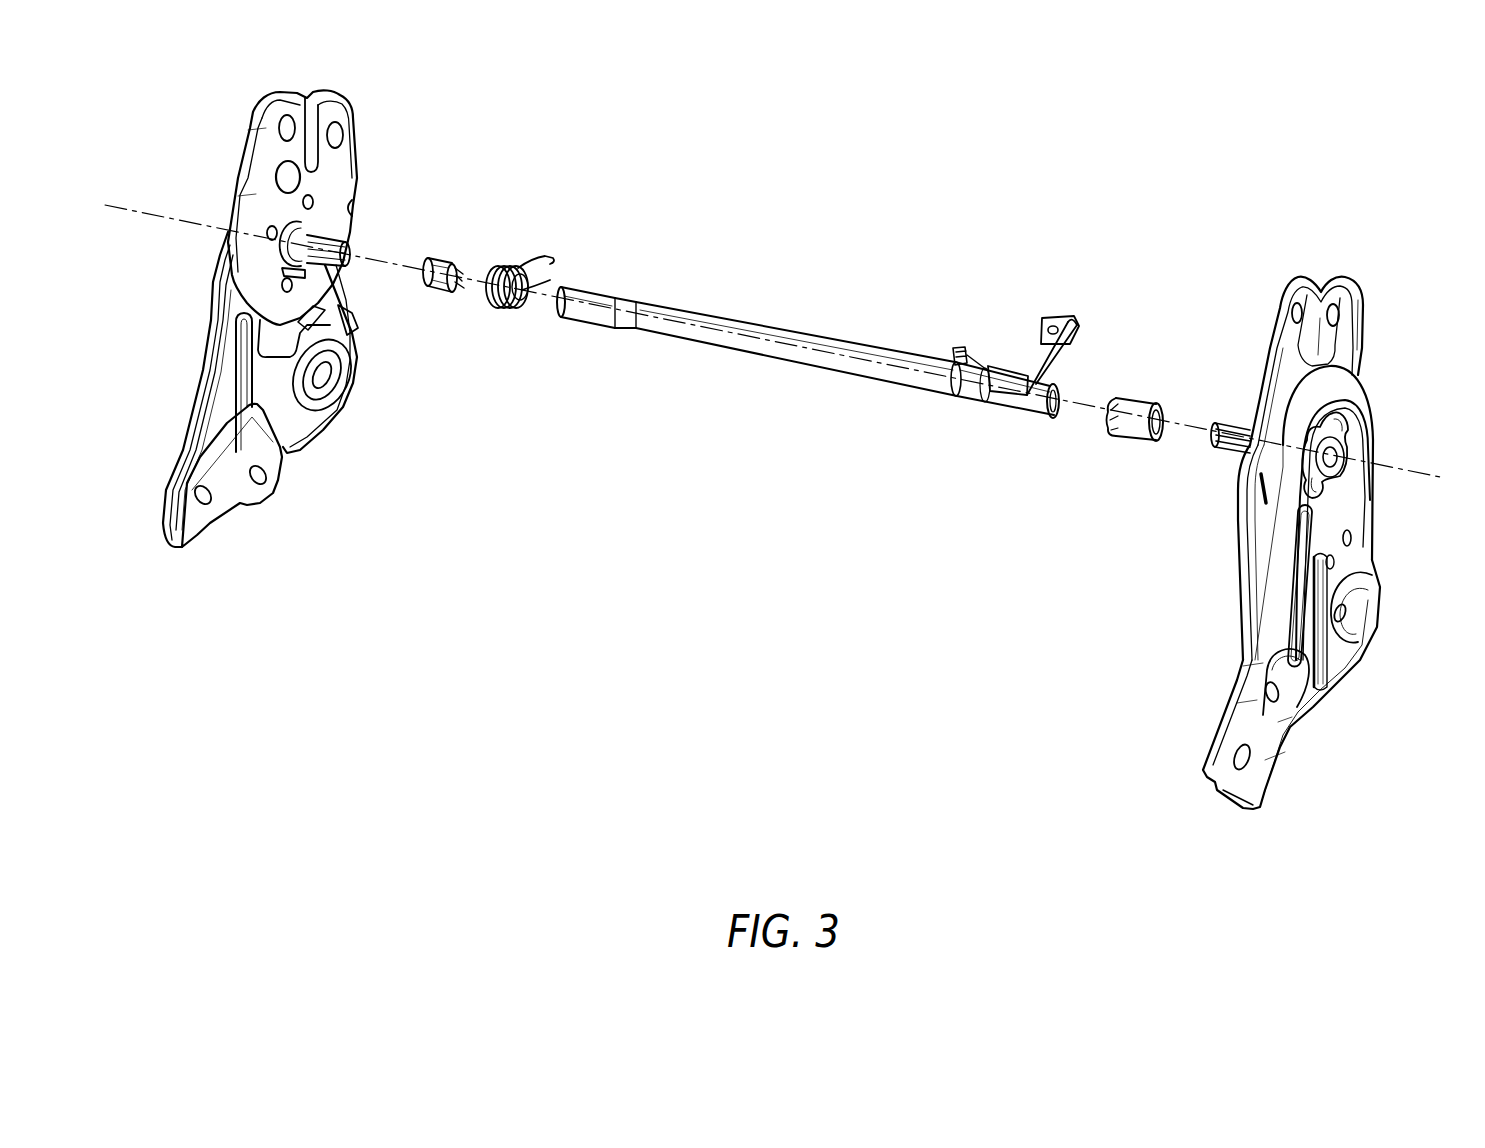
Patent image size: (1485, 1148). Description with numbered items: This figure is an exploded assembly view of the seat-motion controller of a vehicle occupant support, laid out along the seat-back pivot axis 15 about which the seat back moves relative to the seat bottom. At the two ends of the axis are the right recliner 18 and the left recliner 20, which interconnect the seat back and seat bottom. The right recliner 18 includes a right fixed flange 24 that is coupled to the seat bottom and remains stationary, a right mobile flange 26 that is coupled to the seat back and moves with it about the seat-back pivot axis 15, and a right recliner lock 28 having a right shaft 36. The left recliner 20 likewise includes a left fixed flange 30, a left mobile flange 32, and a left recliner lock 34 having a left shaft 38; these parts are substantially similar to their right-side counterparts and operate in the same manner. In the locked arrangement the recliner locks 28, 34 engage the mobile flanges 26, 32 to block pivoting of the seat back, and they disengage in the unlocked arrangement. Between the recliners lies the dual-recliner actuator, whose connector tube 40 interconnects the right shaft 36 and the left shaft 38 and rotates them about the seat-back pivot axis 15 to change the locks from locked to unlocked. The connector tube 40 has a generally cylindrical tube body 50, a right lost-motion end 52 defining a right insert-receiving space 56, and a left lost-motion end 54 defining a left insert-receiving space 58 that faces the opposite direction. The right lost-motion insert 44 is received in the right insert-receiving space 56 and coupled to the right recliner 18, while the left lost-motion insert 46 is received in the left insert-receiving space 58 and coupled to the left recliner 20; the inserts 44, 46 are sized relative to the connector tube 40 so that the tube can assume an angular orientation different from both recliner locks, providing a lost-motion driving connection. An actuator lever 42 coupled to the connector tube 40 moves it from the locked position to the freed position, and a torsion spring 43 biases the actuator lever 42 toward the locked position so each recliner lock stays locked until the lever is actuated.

The seat-back pivot axis 15 is at (1435, 472).
The right recliner 18 is at (266, 297).
The left recliner 20 is at (1321, 505).
The right fixed flange 24 is at (207, 360).
The right mobile flange 26 is at (277, 93).
The right recliner lock 28 is at (322, 190).
The left fixed flange 30 is at (1393, 537).
The left mobile flange 32 is at (1358, 260).
The left recliner lock 34 is at (1248, 485).
The right shaft 36 is at (335, 232).
The left shaft 38 is at (1240, 418).
The connector tube 40 is at (860, 366).
The actuator lever 42 is at (1080, 305).
The torsion spring 43 is at (548, 243).
The right lost-motion insert 44 is at (447, 250).
The left lost-motion insert 46 is at (1143, 393).
The tube body 50 is at (757, 321).
The right lost-motion end 52 is at (611, 321).
The left lost-motion end 54 is at (1005, 428).
The right insert-receiving space 56 is at (597, 300).
The left insert-receiving space 58 is at (1055, 422).